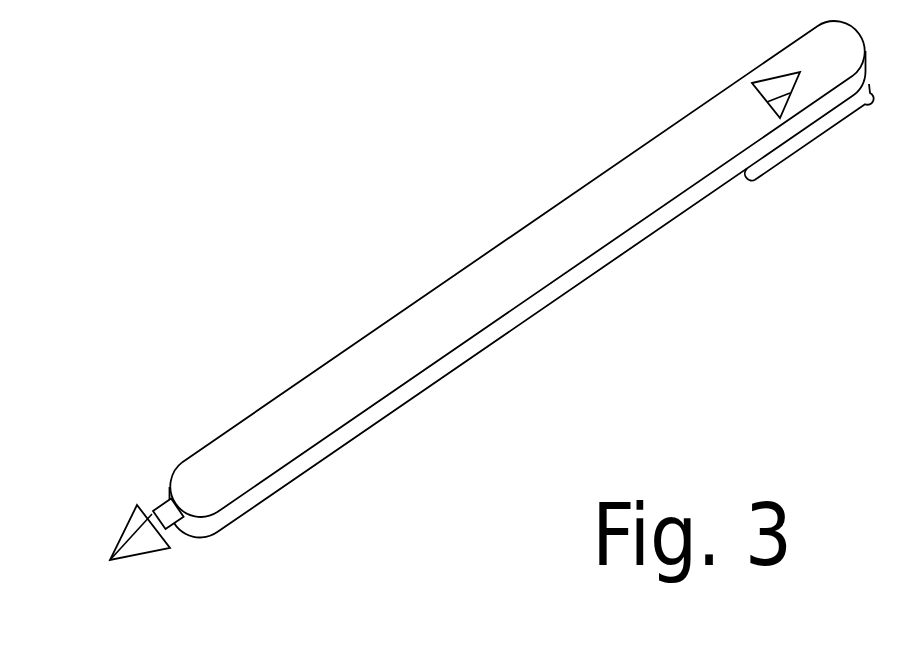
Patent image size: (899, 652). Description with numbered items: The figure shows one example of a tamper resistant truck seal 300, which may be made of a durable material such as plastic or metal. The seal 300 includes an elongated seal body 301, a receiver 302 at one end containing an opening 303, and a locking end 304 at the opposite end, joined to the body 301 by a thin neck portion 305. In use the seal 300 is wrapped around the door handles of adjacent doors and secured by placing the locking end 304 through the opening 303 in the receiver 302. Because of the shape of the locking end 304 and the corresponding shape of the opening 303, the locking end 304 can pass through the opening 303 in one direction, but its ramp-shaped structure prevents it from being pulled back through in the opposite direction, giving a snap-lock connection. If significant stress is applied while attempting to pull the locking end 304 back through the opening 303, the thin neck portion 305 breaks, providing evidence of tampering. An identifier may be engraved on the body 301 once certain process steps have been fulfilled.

The truck seal 300 is at (470, 156).
The seal body 301 is at (413, 317).
The receiver 302 is at (827, 140).
The opening 303 is at (777, 94).
The locking end 304 is at (118, 533).
The thin neck portion 305 is at (174, 537).